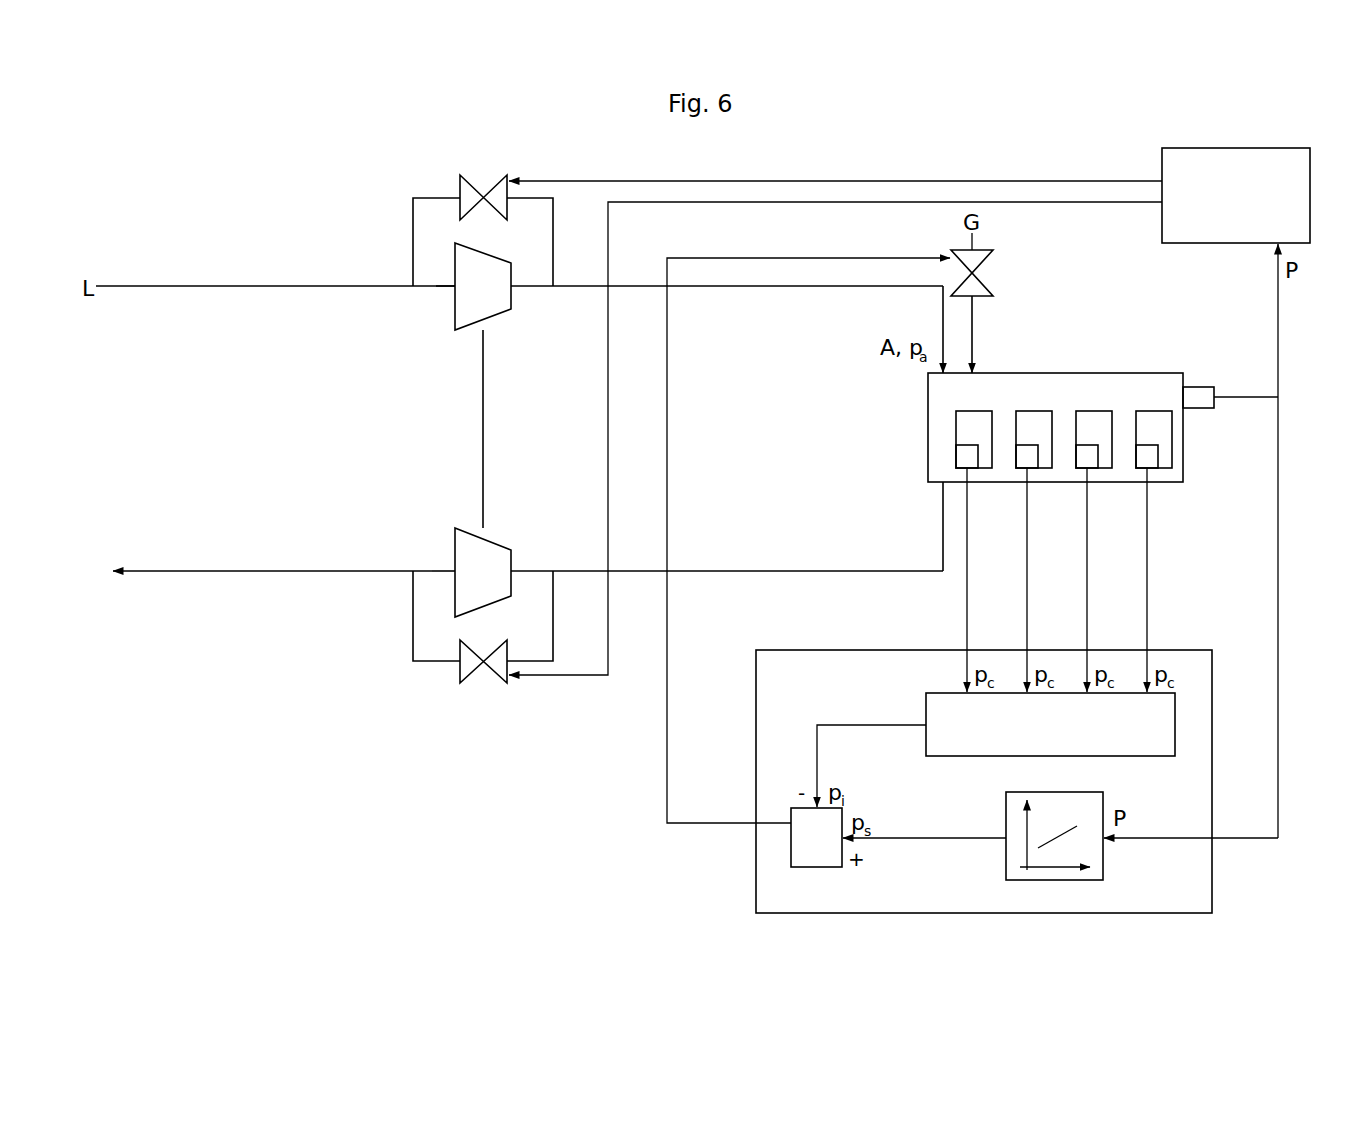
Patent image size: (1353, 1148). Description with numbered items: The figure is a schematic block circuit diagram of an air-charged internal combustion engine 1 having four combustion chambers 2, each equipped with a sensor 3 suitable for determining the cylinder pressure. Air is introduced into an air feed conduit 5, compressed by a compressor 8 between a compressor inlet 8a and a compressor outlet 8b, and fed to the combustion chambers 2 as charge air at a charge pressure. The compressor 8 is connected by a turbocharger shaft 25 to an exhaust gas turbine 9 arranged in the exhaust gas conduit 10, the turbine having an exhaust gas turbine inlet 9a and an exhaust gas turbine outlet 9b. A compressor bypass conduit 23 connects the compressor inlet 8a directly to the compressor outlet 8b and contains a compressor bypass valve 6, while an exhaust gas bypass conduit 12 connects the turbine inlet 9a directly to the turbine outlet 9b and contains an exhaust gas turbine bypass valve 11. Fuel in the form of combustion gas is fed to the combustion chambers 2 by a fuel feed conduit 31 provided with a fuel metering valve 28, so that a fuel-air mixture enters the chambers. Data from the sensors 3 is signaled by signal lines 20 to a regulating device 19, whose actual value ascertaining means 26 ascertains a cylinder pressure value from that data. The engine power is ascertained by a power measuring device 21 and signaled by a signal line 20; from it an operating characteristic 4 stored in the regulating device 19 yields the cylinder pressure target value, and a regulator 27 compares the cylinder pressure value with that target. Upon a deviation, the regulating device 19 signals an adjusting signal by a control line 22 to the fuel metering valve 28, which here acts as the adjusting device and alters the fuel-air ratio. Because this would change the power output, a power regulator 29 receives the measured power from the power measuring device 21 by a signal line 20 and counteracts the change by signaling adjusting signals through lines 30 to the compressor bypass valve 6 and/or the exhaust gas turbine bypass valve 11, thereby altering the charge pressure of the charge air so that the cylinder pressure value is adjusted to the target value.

The internal combustion engine 1 is at (1128, 350).
The combustion chambers 2 is at (1155, 425).
The sensor 3 is at (967, 468).
The operating characteristic 4 is at (1004, 858).
The air feed conduit 5 is at (262, 285).
The compressor bypass valve 6 is at (467, 170).
The compressor 8 is at (483, 286).
The compressor inlet 8a is at (436, 286).
The compressor outlet 8b is at (530, 286).
The exhaust gas turbine 9 is at (483, 572).
The exhaust gas turbine inlet 9a is at (528, 570).
The exhaust gas turbine outlet 9b is at (432, 570).
The exhaust gas conduit 10 is at (260, 573).
The exhaust gas turbine bypass valve 11 is at (465, 686).
The exhaust gas bypass conduit 12 is at (412, 625).
The regulating device 19 is at (755, 702).
The signal lines 20 is at (1278, 310).
The power measuring device 21 is at (1199, 387).
The control line 22 is at (665, 716).
The compressor bypass conduit 23 is at (412, 223).
The turbocharger shaft 25 is at (482, 428).
The actual value ascertaining means 26 is at (1050, 724).
The regulator 27 is at (858, 796).
The fuel metering valve 28 is at (992, 268).
The power regulator 29 is at (1236, 195).
The lines 30 is at (803, 202).
The fuel feed conduit 31 is at (973, 328).